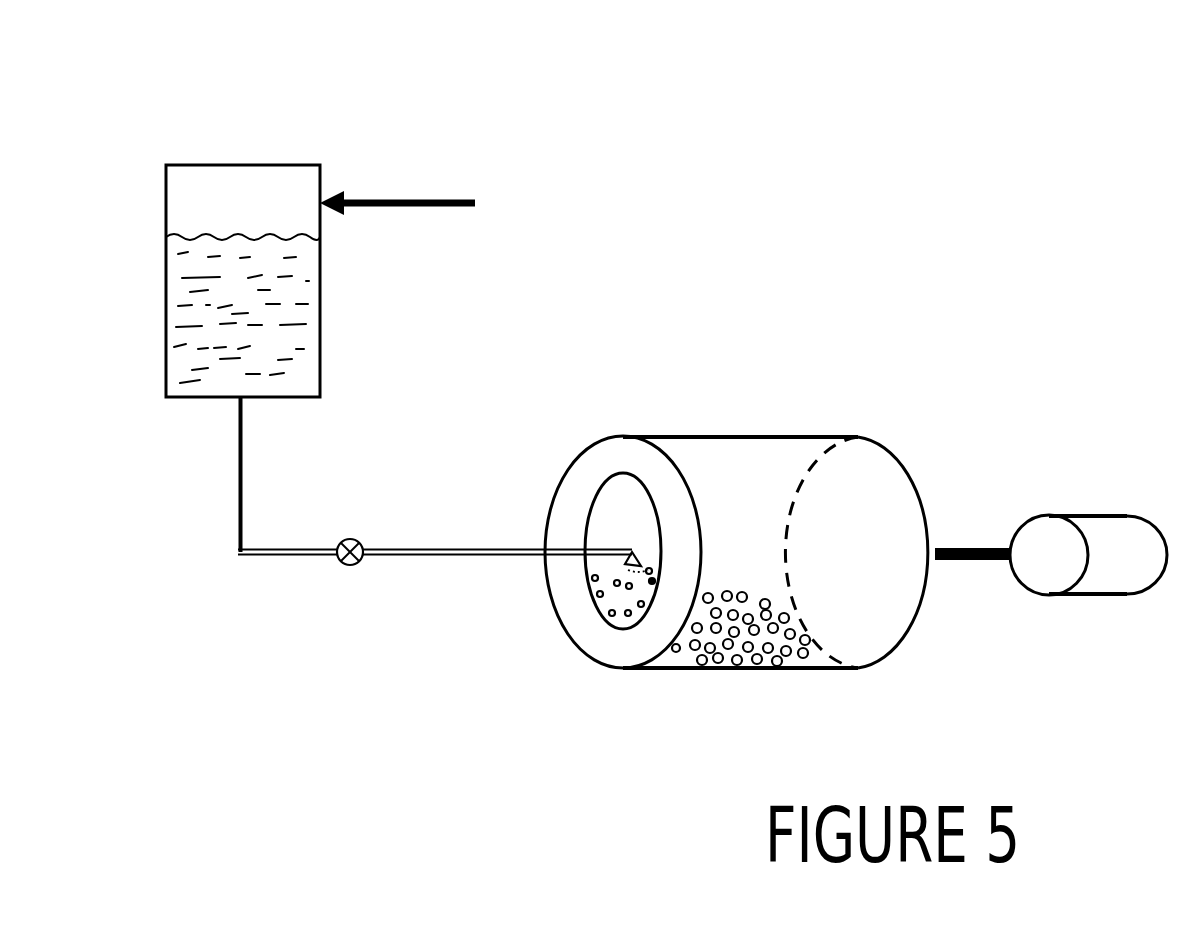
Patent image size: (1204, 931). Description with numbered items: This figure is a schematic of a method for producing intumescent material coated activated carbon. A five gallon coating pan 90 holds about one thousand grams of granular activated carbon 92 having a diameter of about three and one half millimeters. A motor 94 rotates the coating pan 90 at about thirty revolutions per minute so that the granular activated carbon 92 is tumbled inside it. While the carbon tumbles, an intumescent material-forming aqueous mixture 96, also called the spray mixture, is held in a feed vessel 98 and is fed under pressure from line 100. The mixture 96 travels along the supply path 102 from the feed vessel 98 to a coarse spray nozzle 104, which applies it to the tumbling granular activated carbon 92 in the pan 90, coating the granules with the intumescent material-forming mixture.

The coating pan 90 is at (743, 437).
The granular activated carbon 92 is at (628, 585).
The motor 94 is at (1088, 515).
The intumescent material-forming aqueous mixture 96 is at (220, 360).
The feed vessel 98 is at (203, 163).
The line 100 is at (362, 200).
The supply line with valve 102 is at (395, 547).
The course spray nozzle 104 is at (630, 556).